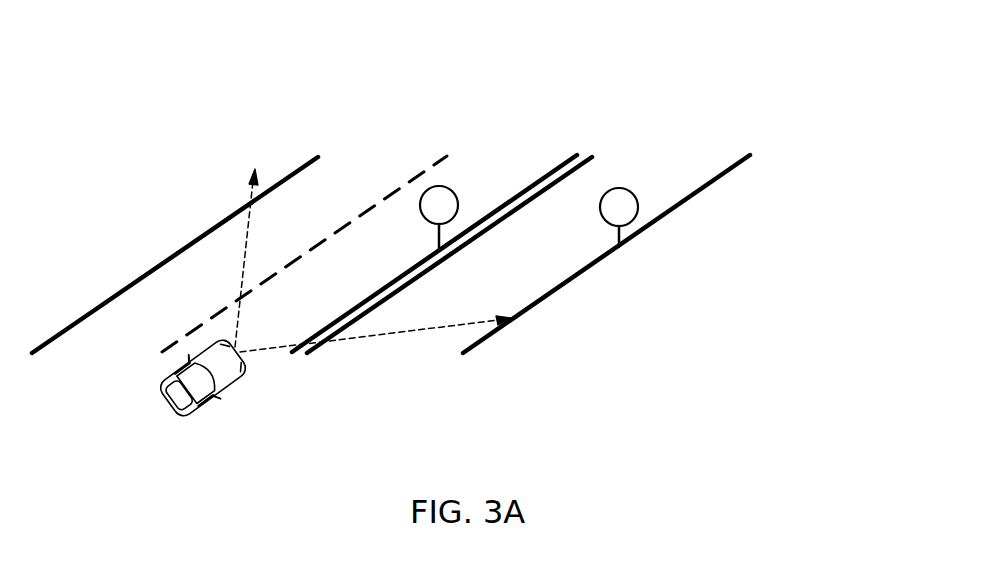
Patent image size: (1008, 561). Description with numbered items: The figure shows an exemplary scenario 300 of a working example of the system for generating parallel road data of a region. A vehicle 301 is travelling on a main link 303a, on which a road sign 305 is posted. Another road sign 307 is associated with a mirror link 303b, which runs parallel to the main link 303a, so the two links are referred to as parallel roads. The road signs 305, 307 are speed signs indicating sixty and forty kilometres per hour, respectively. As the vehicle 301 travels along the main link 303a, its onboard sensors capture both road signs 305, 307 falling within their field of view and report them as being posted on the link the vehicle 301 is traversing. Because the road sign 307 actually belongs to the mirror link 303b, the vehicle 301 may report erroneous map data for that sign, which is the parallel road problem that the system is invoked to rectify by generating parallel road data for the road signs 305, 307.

The exemplary scenario 300 is at (760, 72).
The vehicle 301 is at (192, 410).
The main link 303a is at (218, 302).
The mirror link 303b is at (567, 262).
The road sign 305 is at (444, 186).
The road sign 307 is at (621, 188).